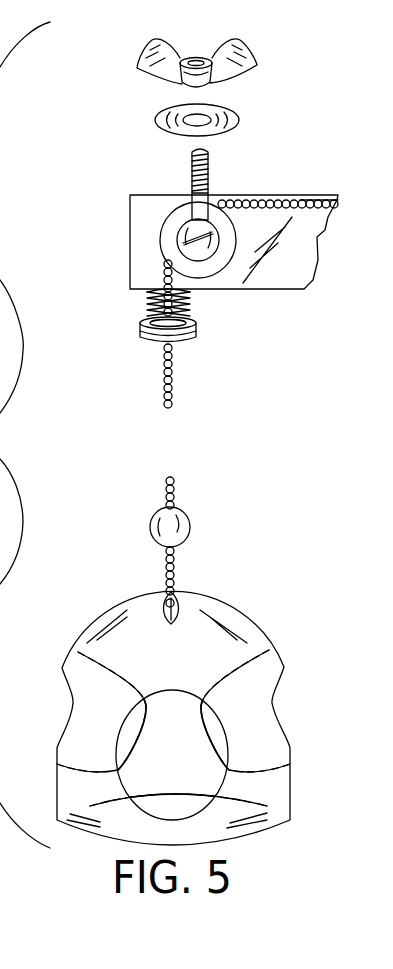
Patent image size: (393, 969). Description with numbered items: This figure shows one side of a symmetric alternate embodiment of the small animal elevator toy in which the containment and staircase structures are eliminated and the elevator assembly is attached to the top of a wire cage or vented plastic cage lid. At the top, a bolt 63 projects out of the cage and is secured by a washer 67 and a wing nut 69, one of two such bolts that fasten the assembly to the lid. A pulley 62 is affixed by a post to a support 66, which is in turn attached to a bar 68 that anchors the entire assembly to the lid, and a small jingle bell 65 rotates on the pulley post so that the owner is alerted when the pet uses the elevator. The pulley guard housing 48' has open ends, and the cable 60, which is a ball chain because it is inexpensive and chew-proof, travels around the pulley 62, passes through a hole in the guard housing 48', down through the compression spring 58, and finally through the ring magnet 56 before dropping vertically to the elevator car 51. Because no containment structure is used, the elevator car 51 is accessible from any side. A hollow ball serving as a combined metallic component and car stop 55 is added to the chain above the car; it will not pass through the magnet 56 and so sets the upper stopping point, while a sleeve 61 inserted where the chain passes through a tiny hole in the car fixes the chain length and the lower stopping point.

The wing nut 69 is at (237, 73).
The washer 67 is at (233, 127).
The bolt 63 is at (191, 175).
The support 66 is at (207, 200).
The jingle bell 65 is at (233, 209).
The bar 68 is at (307, 193).
The pulley guard housing 48' is at (235, 266).
The pulley 62 is at (222, 270).
The compression spring 58 is at (150, 307).
The ring magnet 56 is at (152, 343).
The cable 60 is at (173, 377).
The metallic component/car stop 55 is at (188, 518).
The sleeve 61 is at (182, 607).
The elevator car 51 is at (255, 626).